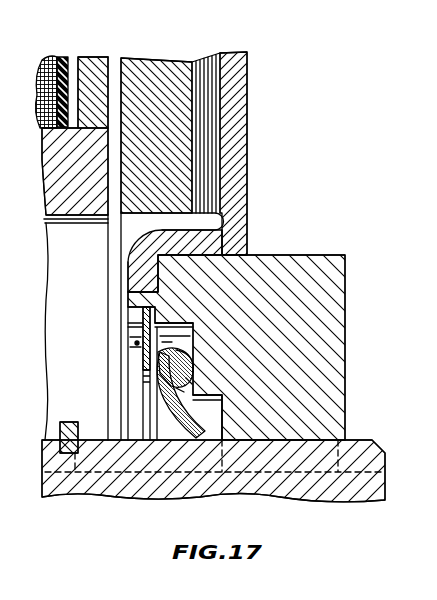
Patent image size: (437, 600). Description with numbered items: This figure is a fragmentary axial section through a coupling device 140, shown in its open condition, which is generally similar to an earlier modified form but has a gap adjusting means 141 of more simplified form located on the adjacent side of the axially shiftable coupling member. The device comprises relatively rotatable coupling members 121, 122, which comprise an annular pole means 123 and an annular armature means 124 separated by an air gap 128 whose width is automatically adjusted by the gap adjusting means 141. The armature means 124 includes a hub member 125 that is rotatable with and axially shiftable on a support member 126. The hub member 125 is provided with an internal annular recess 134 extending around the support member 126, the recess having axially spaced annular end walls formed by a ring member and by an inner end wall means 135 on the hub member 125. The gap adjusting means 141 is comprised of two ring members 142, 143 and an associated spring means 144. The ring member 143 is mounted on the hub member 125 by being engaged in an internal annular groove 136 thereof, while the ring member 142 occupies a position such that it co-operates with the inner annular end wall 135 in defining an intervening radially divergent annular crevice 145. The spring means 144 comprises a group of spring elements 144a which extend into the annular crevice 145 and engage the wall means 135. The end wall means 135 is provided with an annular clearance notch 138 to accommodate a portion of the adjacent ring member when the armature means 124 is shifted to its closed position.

The coupling member 121 is at (94, 53).
The coupling member 122 is at (172, 60).
The annular pole means 123 is at (68, 212).
The annular armature means 124 is at (168, 204).
The hub member 125 is at (292, 257).
The support member 126 is at (352, 450).
The air gap 128 is at (113, 55).
The internal annular recess 134 is at (172, 330).
The inner end wall means 135 is at (182, 391).
The internal annular groove 136 is at (143, 322).
The annular clearance notch 138 is at (206, 403).
The coupling device 140 is at (247, 82).
The gap adjusting means 141 is at (135, 343).
The ring member 142 is at (165, 393).
The ring member 143 is at (143, 357).
The spring means 144 is at (188, 350).
The spring elements 144a is at (192, 364).
The radially divergent annular crevice 145 is at (193, 380).